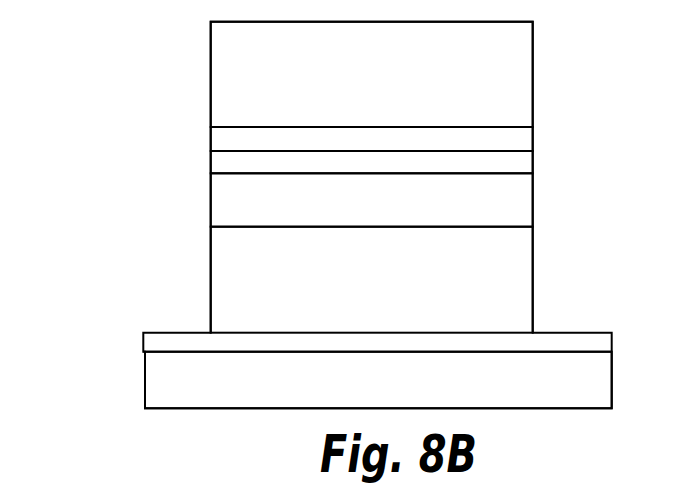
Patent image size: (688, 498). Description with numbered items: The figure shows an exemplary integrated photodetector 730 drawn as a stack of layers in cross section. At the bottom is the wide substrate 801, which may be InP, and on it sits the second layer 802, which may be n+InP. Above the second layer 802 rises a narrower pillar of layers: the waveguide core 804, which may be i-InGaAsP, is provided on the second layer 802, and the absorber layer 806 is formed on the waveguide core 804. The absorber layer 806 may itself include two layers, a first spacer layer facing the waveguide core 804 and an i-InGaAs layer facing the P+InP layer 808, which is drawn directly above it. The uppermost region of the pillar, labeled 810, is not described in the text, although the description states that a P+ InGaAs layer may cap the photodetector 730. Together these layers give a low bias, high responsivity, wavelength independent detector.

The integrated photodetector 730 is at (637, 116).
The top electrode layer 810 is at (211, 75).
The P+InP layer 808 is at (211, 139).
The absorber layer 806 is at (211, 163).
The waveguide core 804 is at (211, 200).
The second layer 802 is at (211, 282).
The substrate 801 is at (143, 380).